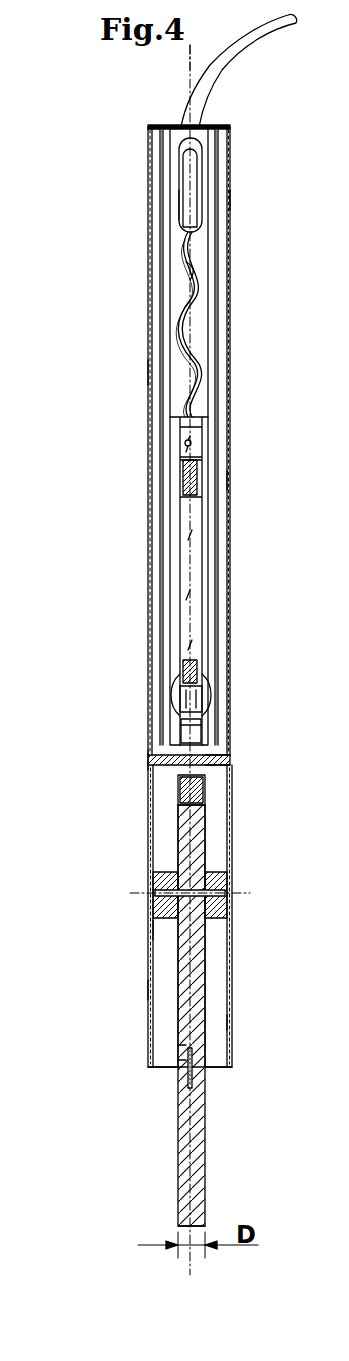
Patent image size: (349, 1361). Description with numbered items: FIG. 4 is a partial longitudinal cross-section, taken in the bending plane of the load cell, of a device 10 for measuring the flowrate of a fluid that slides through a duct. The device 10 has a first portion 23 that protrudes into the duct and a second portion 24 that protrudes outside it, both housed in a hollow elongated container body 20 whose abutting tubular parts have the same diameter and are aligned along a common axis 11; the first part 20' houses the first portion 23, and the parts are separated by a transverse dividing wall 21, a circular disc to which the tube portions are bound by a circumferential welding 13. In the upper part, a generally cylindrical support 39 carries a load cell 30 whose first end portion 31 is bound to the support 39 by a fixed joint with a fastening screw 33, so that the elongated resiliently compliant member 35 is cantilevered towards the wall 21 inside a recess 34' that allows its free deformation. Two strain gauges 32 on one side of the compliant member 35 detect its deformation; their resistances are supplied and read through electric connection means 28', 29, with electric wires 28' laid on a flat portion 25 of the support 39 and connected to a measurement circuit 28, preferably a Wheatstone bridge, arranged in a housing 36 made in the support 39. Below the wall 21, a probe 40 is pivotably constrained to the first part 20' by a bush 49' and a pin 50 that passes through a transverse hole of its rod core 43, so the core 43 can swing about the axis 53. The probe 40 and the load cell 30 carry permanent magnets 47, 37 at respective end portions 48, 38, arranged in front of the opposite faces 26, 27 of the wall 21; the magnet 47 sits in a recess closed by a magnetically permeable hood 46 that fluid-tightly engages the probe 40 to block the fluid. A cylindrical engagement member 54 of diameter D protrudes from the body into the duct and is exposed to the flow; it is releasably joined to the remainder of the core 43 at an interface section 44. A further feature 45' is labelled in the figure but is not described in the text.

The device 10 is at (269, 202).
The common axis 11 is at (189, 62).
The circumferential welding 13 is at (229, 760).
The hollow elongated container body 20 is at (239, 596).
The first part of the hollow elongated container body 20' is at (255, 1079).
The transverse dividing wall 21 is at (149, 759).
The first portion 23 is at (150, 990).
The second portion 24 is at (235, 479).
The flat portion 25 is at (183, 330).
The face of separation wall 26 is at (205, 752).
The face of separation wall 27 is at (216, 770).
The measurement circuit 28 is at (231, 185).
The electric wires 28' is at (238, 253).
The electric connection means 29 is at (233, 45).
The load cell 30 is at (184, 538).
The first end portion of load cell 31 is at (184, 428).
The strain gauges 32 is at (197, 478).
The fastening screw 33 is at (192, 443).
The recess 34' is at (154, 673).
The elongated resiliently compliant member 35 is at (203, 580).
The housing 36 is at (178, 215).
The permanent magnet 37 is at (190, 740).
The end portion of load cell 38 is at (208, 728).
The support 39 is at (160, 126).
The probe 40 is at (143, 1106).
The rod core 43 is at (205, 990).
The interface section 44 is at (212, 1070).
The stop 45' is at (133, 1046).
The hood 46 is at (178, 822).
The permanent magnet 47 is at (180, 790).
The end portion of probe 48 is at (180, 845).
The bush 49' is at (134, 940).
The pin 50 is at (218, 905).
The axis 53 is at (248, 893).
The engagement member 54 is at (208, 1178).